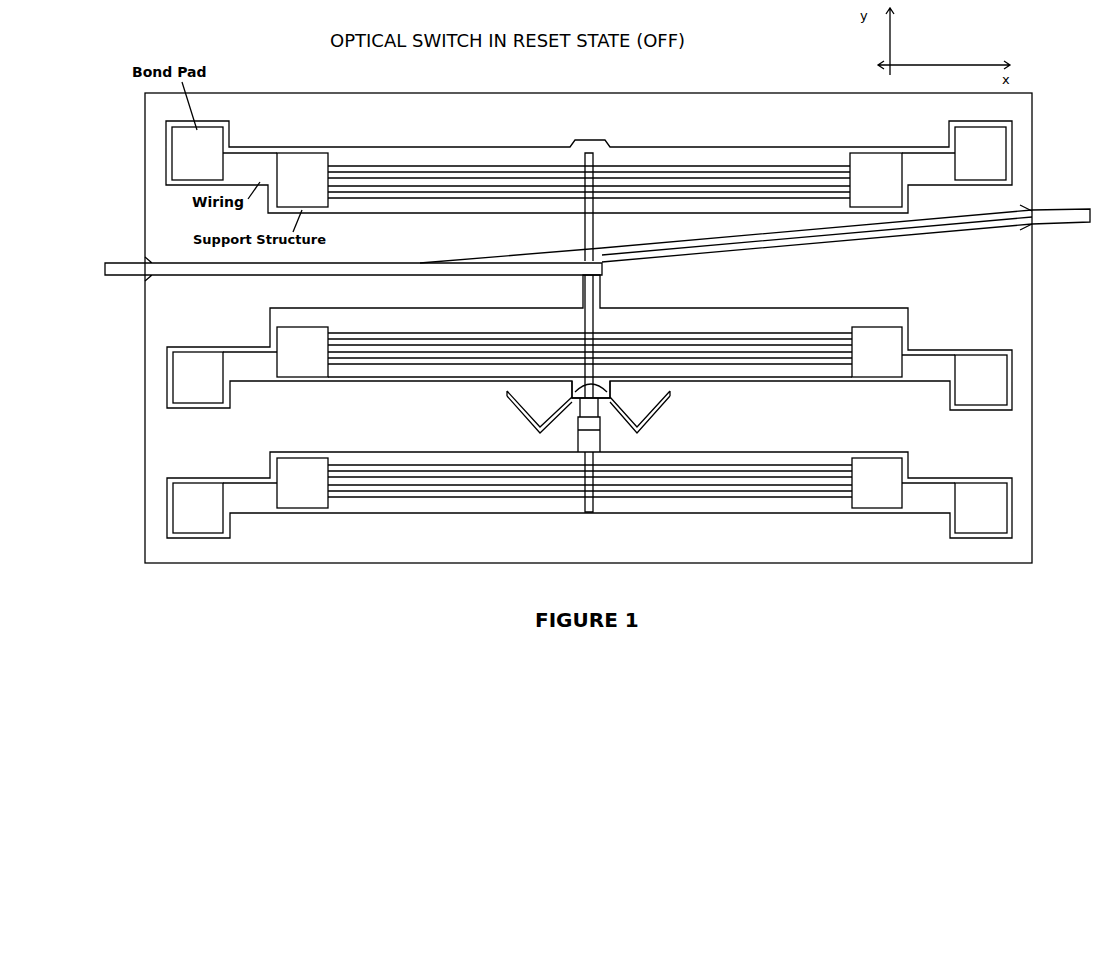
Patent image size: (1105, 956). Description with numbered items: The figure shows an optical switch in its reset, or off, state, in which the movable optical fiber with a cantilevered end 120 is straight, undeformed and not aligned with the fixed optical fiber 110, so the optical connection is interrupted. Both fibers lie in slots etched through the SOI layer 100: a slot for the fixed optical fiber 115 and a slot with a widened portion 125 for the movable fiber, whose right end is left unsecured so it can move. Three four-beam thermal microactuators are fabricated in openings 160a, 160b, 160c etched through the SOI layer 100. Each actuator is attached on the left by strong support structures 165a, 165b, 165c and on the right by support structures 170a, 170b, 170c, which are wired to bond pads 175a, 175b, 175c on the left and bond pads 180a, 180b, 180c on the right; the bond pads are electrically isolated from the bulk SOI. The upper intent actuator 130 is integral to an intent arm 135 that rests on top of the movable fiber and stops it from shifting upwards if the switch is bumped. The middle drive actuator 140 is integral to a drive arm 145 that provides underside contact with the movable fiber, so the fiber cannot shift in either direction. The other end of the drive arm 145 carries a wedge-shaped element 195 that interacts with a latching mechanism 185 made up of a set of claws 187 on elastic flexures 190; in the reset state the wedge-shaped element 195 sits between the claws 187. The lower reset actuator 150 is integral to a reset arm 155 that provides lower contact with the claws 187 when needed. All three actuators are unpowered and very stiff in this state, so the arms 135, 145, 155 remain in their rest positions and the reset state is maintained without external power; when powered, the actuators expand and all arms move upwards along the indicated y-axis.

The SOI layer 100 is at (870, 565).
The fixed optical fiber 110 is at (940, 233).
The slot for fixed optical fiber 115 is at (782, 244).
The movable optical fiber with cantilevered end 120 is at (570, 272).
The slot with widened portion 125 is at (540, 265).
The intent actuator 130 is at (414, 152).
The intent arm 135 is at (587, 151).
The drive actuator 140 is at (386, 378).
The drive arm 145 is at (596, 312).
The reset actuator 150 is at (385, 516).
The reset arm 155 is at (590, 514).
The opening through SOI layer 160a is at (830, 148).
The opening through SOI layer 160b is at (744, 299).
The opening through SOI layer 160c is at (612, 516).
The support structure 165a is at (302, 180).
The support structure 165b is at (302, 352).
The support structure 165c is at (302, 483).
The support structure 170a is at (876, 180).
The support structure 170b is at (877, 352).
The support structure 170c is at (877, 483).
The bond pad 175a is at (224, 153).
The bond pad 175b is at (225, 377).
The bond pad 175c is at (225, 508).
The bond pad 180a is at (954, 153).
The bond pad 180b is at (954, 380).
The bond pad 180c is at (954, 508).
The latching mechanism 185 is at (546, 396).
The claws 187 is at (600, 432).
The flexures 190 is at (645, 420).
The wedge-shaped element 195 is at (612, 392).